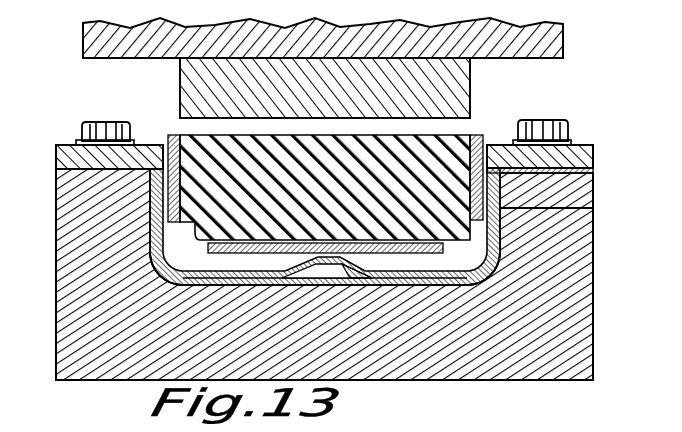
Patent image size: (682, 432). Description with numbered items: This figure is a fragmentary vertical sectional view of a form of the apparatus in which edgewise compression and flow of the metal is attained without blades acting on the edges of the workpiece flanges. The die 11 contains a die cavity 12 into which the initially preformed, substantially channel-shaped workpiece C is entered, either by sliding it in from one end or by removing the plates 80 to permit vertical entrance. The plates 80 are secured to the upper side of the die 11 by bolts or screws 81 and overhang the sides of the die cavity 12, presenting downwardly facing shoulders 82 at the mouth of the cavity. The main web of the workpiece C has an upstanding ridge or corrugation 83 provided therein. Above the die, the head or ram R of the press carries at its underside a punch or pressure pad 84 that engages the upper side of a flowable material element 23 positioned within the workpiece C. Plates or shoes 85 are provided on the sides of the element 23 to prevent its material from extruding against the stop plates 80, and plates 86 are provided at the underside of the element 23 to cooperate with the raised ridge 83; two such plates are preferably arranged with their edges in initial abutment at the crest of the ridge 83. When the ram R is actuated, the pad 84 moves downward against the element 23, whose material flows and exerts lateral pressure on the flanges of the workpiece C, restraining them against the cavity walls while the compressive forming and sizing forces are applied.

The ram R is at (82, 44).
The workpiece C is at (150, 232).
The die 11 is at (577, 296).
The die cavity 12 is at (590, 212).
The flowable material element 23 is at (463, 231).
The plates 80 is at (593, 160).
The bolts or screws 81 is at (553, 121).
The shoulders 82 is at (593, 172).
The ridge 83 is at (337, 265).
The pressure pad 84 is at (470, 94).
The plates or shoes 85 is at (168, 182).
The plates 86 is at (153, 273).